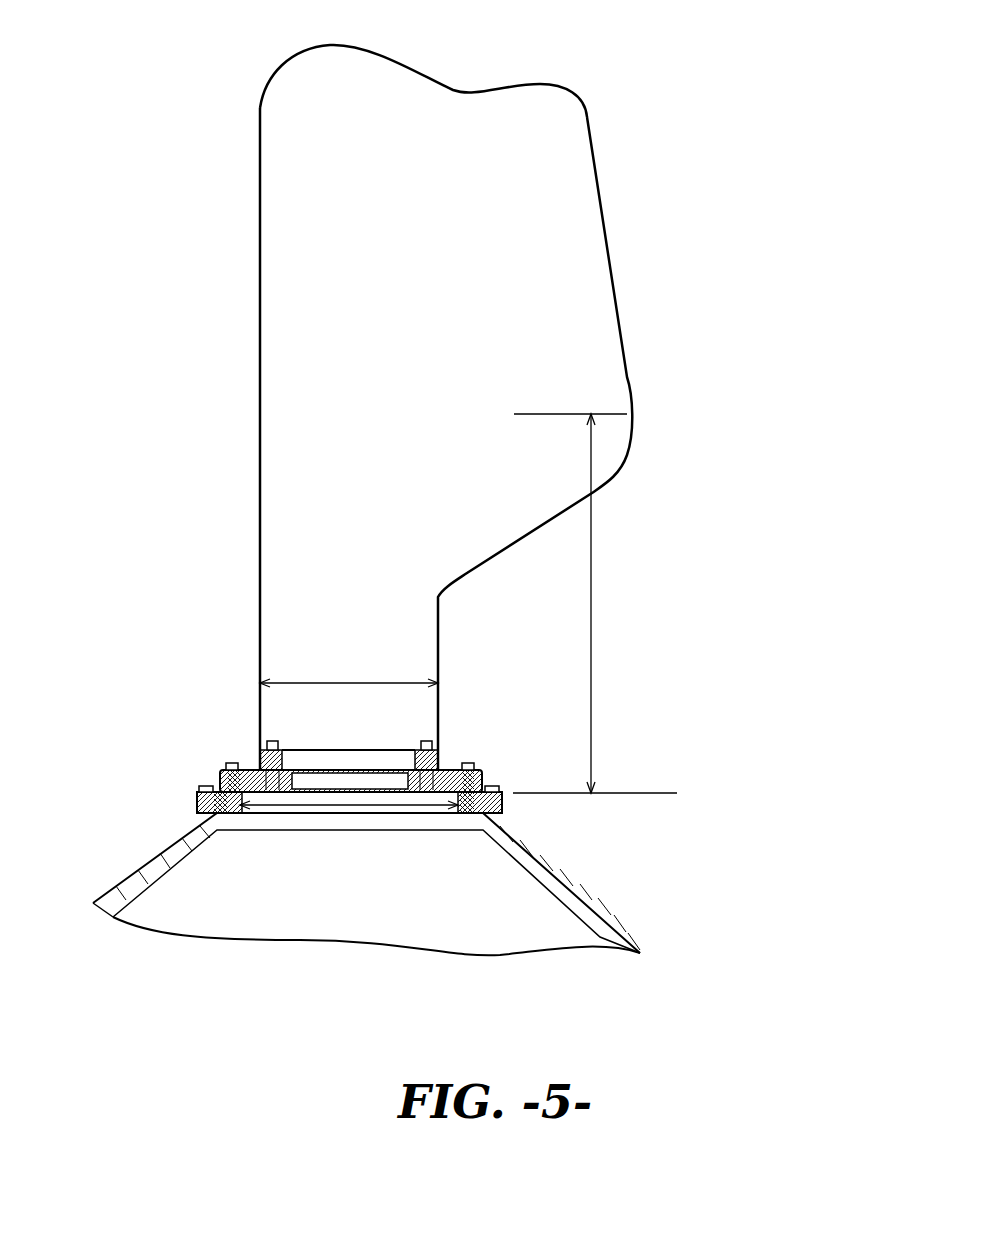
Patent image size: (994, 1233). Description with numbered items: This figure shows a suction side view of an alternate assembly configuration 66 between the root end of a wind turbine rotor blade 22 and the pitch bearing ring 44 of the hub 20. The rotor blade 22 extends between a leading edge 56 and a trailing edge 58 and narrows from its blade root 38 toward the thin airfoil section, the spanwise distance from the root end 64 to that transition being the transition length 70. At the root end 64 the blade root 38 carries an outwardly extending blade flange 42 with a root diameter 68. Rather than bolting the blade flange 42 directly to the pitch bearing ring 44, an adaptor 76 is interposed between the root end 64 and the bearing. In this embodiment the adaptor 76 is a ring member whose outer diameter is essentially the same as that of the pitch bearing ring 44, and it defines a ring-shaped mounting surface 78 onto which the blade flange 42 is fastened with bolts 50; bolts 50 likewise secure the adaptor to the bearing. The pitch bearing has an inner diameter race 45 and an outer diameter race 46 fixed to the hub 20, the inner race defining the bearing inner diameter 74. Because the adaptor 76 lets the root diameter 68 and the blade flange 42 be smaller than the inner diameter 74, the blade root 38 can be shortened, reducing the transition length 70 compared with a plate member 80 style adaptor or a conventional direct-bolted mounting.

The hub 20 is at (604, 883).
The rotor blade 22 is at (747, 105).
The blade root 38 is at (428, 407).
The blade flange 42 is at (415, 750).
The pitch bearing ring 44 is at (316, 829).
The inner diameter race 45 is at (472, 813).
The outer diameter race 46 is at (197, 805).
The bolts 50 is at (272, 740).
The leading edge 56 is at (260, 270).
The trailing edge 58 is at (610, 260).
The root end 64 is at (260, 770).
The assembly configuration 66 is at (135, 838).
The root diameter 68 is at (405, 683).
The transition length 70 is at (591, 563).
The inner diameter 74 is at (358, 806).
The adaptor 76 is at (487, 773).
The mounting surface 78 is at (349, 747).
The plate member 80 is at (218, 780).